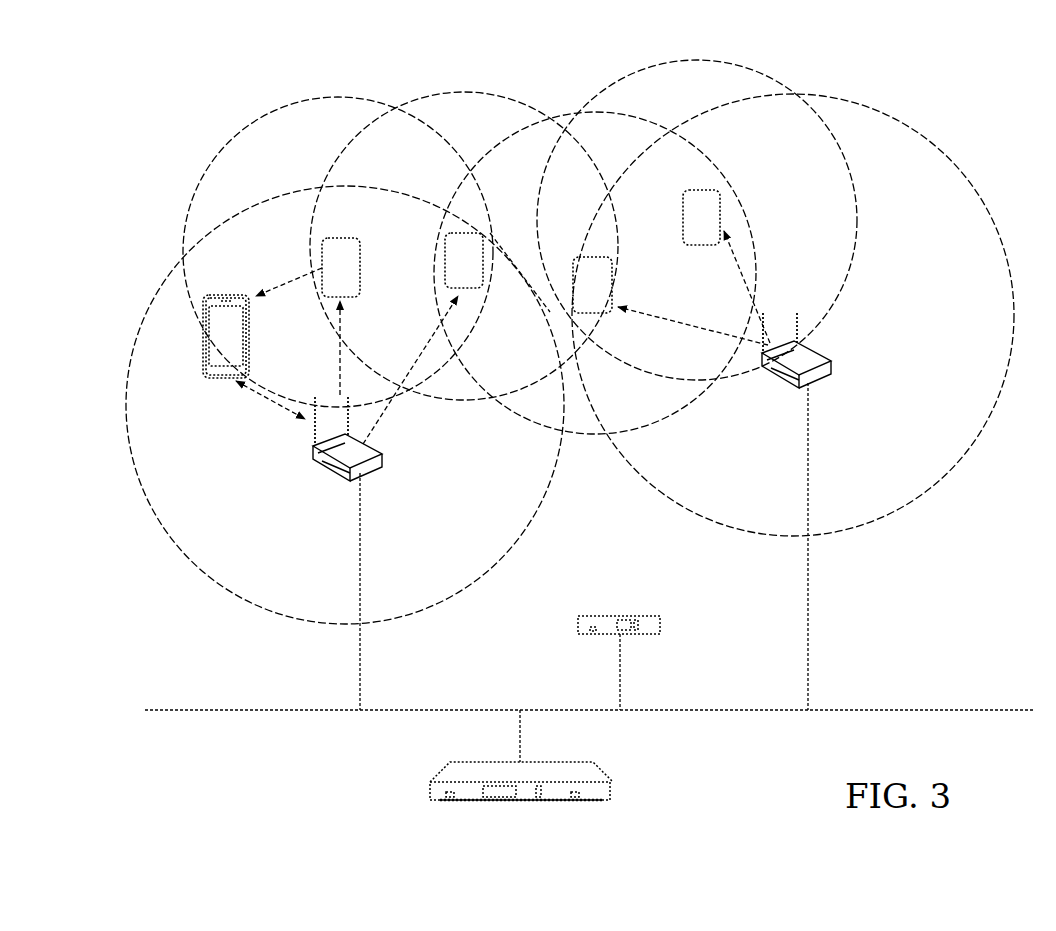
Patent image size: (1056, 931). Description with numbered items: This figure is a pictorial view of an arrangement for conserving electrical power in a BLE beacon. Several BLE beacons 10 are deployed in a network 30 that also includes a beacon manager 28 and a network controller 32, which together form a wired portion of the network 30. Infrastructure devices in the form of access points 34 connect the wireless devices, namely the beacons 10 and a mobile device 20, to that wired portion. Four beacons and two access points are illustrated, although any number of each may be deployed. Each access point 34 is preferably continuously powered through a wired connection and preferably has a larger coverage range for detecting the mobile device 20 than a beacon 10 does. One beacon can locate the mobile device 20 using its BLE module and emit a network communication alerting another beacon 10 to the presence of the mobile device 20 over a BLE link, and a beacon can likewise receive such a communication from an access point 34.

The network 30 is at (124, 91).
The BLE beacon 10 is at (339, 237).
The mobile device 20 is at (226, 293).
The access point 34 is at (328, 462).
The beacon manager 28 is at (578, 623).
The network controller 32 is at (430, 790).